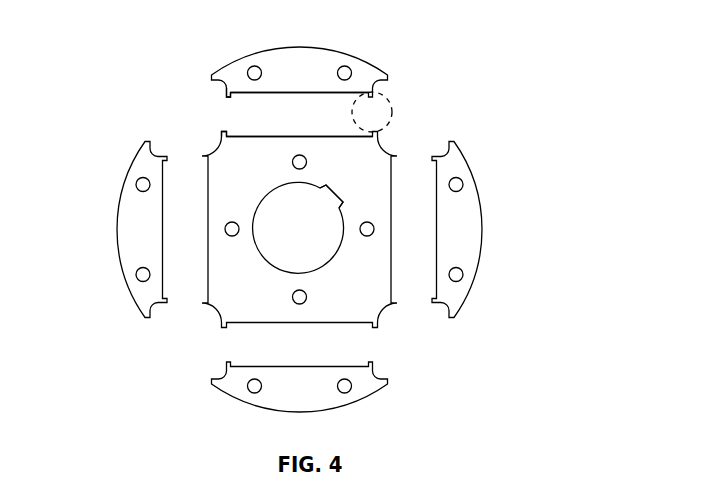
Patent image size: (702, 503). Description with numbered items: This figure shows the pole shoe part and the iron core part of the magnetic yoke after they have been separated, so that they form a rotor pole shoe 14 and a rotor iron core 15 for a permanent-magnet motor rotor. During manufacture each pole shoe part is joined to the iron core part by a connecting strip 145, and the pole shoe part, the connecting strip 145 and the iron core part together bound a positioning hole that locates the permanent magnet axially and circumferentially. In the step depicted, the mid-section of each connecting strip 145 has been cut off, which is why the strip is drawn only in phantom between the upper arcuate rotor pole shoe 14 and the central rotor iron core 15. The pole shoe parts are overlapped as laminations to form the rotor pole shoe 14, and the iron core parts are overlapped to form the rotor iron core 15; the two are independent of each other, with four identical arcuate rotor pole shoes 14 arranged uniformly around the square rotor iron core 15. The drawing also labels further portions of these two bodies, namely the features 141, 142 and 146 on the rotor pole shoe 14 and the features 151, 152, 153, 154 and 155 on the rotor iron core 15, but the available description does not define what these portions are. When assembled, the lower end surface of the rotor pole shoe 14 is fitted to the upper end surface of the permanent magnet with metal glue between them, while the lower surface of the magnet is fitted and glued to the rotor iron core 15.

The rotor pole shoe 14 is at (360, 73).
The positioning tab 141 is at (227, 100).
The flat abutting edge 142 is at (320, 92).
The connecting strip 145 is at (371, 110).
The fixing hole 146 is at (462, 188).
The rotor iron core 15 is at (233, 161).
The positioning tab of base plate 151 is at (233, 126).
The top edge of base plate 152 is at (280, 137).
The central hole 153 is at (330, 261).
The key notch 154 is at (343, 196).
The mounting hole 155 is at (225, 230).